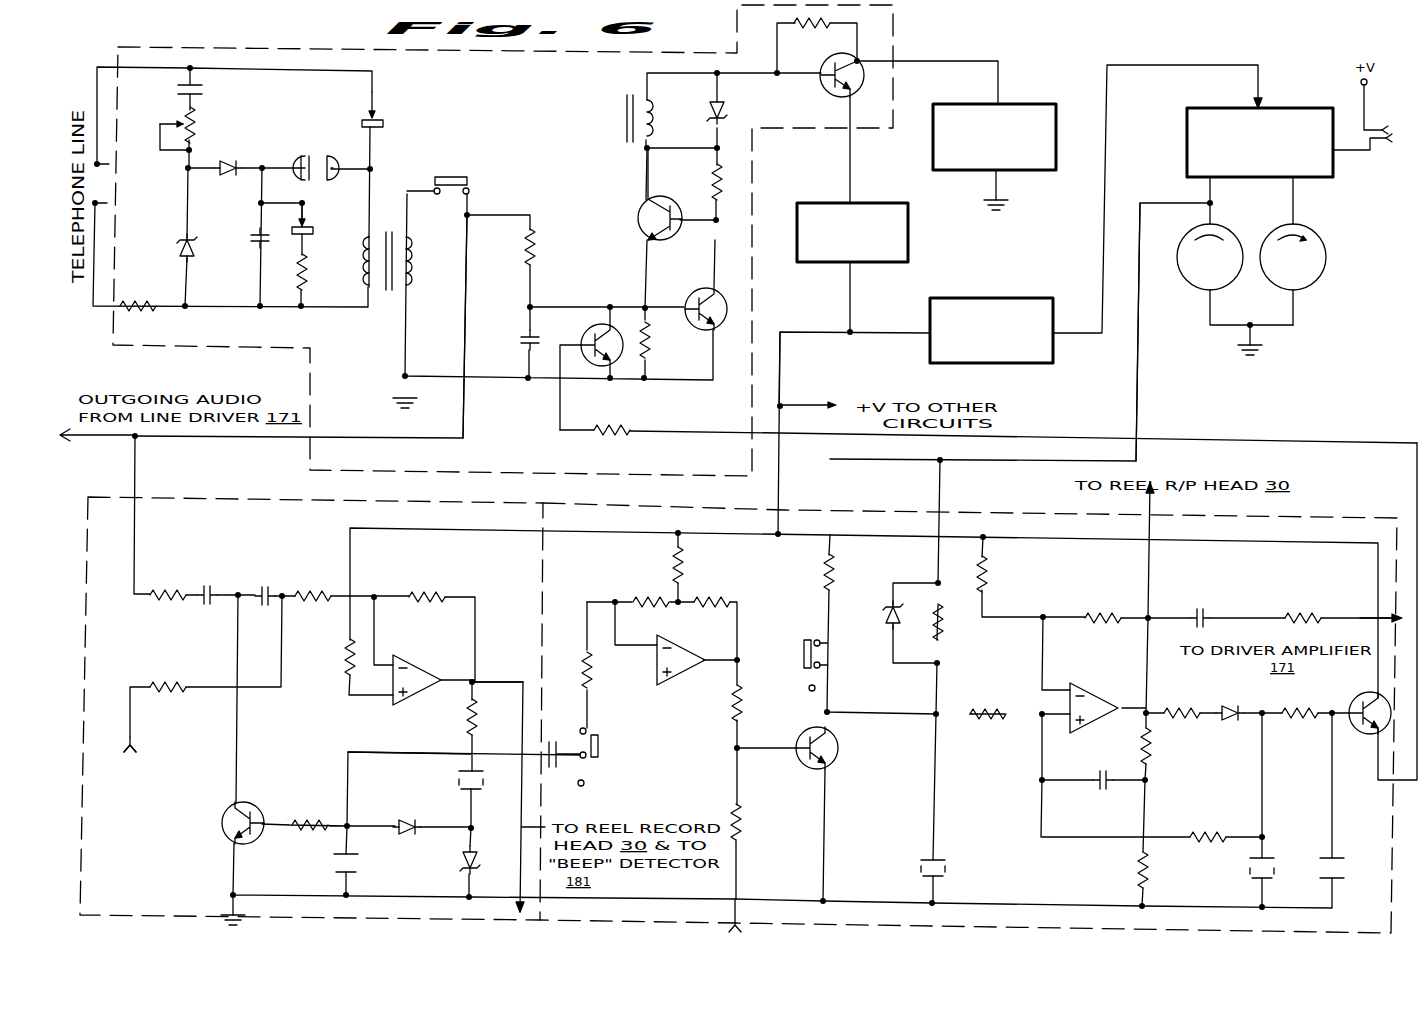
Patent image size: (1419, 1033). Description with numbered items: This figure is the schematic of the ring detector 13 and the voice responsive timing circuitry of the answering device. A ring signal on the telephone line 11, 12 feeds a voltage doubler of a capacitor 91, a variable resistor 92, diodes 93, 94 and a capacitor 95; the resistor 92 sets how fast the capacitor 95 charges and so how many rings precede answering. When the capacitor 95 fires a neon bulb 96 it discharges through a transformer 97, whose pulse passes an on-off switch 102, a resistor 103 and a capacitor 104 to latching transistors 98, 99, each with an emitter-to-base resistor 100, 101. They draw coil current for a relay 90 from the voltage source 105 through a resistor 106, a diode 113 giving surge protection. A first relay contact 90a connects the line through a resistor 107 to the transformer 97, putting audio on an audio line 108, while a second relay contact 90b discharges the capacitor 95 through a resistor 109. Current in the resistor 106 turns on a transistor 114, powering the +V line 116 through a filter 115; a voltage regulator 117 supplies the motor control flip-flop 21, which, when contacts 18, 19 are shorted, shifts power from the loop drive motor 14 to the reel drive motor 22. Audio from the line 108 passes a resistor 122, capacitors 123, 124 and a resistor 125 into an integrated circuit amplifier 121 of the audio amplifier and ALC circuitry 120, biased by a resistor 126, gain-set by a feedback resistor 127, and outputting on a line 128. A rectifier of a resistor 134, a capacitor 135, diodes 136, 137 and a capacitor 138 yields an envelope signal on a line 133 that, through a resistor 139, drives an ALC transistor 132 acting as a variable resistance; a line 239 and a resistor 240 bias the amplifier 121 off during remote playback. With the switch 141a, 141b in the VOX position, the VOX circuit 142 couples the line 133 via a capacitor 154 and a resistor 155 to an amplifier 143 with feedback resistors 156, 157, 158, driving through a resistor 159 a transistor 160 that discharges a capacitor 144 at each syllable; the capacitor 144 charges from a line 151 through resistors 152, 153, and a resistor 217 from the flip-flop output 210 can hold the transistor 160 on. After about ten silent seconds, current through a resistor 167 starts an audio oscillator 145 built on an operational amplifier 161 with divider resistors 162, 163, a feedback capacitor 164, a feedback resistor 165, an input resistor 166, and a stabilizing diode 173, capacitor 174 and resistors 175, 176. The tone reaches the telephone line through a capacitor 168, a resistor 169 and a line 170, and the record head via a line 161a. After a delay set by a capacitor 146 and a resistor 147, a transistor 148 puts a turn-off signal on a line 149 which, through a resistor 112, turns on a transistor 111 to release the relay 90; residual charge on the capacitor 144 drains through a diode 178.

The telephone line 11 is at (118, 166).
The telephone line 12 is at (116, 204).
The ring detect circuit 13 is at (503, 240).
The loop drive motor 14 is at (1308, 282).
The contact 18 is at (1398, 127).
The contact 19 is at (1400, 149).
The motor control flip-flop 21 is at (1278, 108).
The incoming message tape reel drive motor 22 is at (1195, 282).
The relay 90 is at (616, 103).
The first relay contact 90a is at (378, 98).
The second relay contact 90b is at (316, 232).
The capacitor 91 is at (204, 90).
The variable series resistor 92 is at (199, 122).
The diode 93 is at (228, 176).
The diode 94 is at (176, 250).
The capacitor 95 is at (253, 243).
The neon bulb 96 is at (320, 145).
The transformer 97 is at (388, 292).
The transistor 98 is at (690, 282).
The transistor 99 is at (637, 208).
The resistor 100 is at (652, 344).
The resistor 101 is at (709, 176).
The on-off switch 102 is at (444, 166).
The resistor 103 is at (537, 248).
The capacitor 104 is at (519, 340).
The system voltage source 105 is at (1035, 104).
The resistor 106 is at (812, 30).
The resistor 107 is at (138, 293).
The audio line 108 is at (465, 420).
The resistor 109 is at (308, 278).
The transistor 111 is at (583, 315).
The resistor 112 is at (615, 437).
The diode 113 is at (725, 112).
The transistor 114 is at (835, 96).
The filter 115 is at (908, 240).
The +V line 116 is at (797, 330).
The voltage regulator 117 is at (985, 298).
The audio amplifier and automatic level control circuitry 120 is at (100, 493).
The integrated circuit amplifier 121 is at (426, 645).
The resistor 122 is at (170, 579).
The capacitor 123 is at (212, 585).
The capacitor 124 is at (268, 588).
The resistor 125 is at (323, 582).
The resistor 126 is at (342, 657).
The feedback resistor 127 is at (435, 583).
The line 128 is at (500, 680).
The transistor 132 is at (220, 823).
The line 133 is at (348, 768).
The resistor 134 is at (464, 722).
The capacitor 135 is at (450, 782).
The diode 136 is at (478, 855).
The diode 137 is at (405, 835).
The capacitor 138 is at (326, 866).
The resistor 139 is at (302, 812).
The switch 141a is at (600, 748).
The switch 141b is at (798, 633).
The VOX circuit 142 is at (1384, 518).
The integrated circuit amplifier 143 is at (672, 680).
The capacitor 144 is at (917, 870).
The audio oscillator 145 is at (1020, 788).
The capacitor 146 is at (1352, 857).
The resistor 147 is at (1298, 720).
The transistor 148 is at (1350, 701).
The line 149 is at (1396, 446).
The line 151 is at (1138, 350).
The resistor 152 is at (821, 572).
The resistor 153 is at (945, 626).
The capacitor 154 is at (548, 752).
The resistor 155 is at (592, 690).
The feedback resistor 156 is at (719, 588).
The feedback resistor 157 is at (652, 588).
The feedback resistor 158 is at (670, 563).
The resistor 159 is at (742, 700).
The transistor 160 is at (839, 752).
The operational amplifier 161 is at (1105, 677).
The line 161a is at (1150, 572).
The resistor 162 is at (1152, 748).
The resistor 163 is at (1129, 866).
The capacitor 164 is at (1107, 762).
The resistor 165 is at (1109, 604).
The resistor 166 is at (989, 572).
The resistor 167 is at (991, 700).
The capacitor 168 is at (1200, 610).
The resistor 169 is at (1303, 612).
The line 170 is at (1354, 604).
The diode 173 is at (1232, 697).
The capacitor 174 is at (1244, 870).
The resistor 175 is at (1181, 728).
The resistor 176 is at (1208, 824).
The diode 178 is at (885, 620).
The flip-flop output 210 is at (732, 918).
The resistor 217 is at (742, 818).
The line 239 is at (130, 727).
The resistor 240 is at (167, 675).